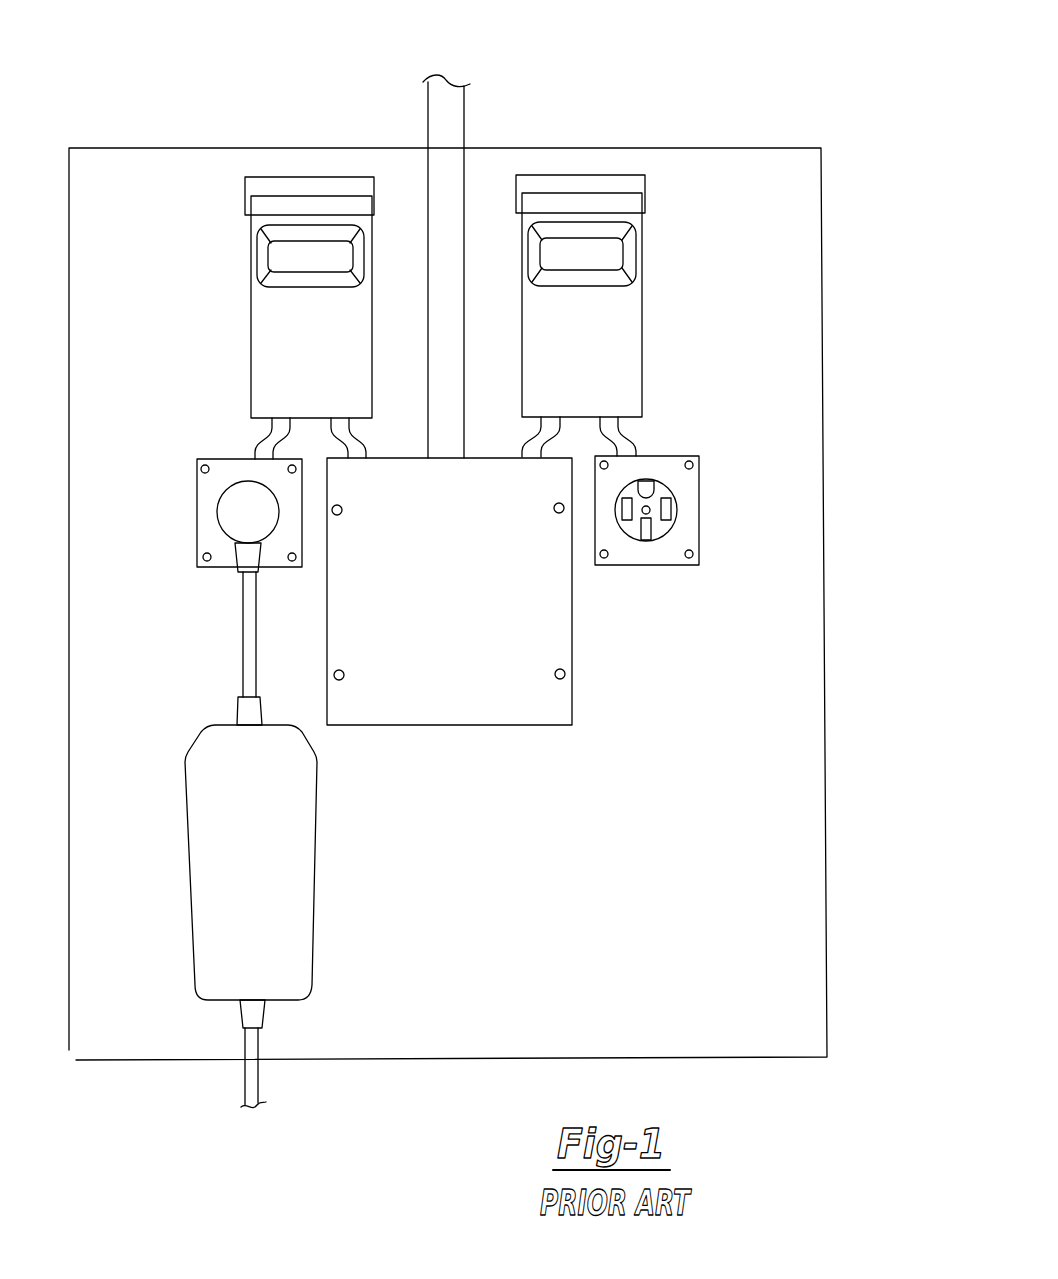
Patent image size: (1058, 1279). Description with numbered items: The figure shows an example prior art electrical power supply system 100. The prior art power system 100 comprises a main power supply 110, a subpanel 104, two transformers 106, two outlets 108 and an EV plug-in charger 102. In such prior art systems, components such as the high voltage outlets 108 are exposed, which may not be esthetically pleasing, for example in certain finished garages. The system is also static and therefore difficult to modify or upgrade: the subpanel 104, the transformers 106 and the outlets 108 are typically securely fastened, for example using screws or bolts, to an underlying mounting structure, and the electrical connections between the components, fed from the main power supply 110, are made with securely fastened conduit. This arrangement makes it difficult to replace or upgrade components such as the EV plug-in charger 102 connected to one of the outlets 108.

The prior art electrical power supply system 100 is at (664, 56).
The EV plug-in charger 102 is at (264, 866).
The subpanel 104 is at (459, 591).
The transformers 106 is at (323, 367).
The outlets 108 is at (197, 514).
The main power supply 110 is at (440, 112).